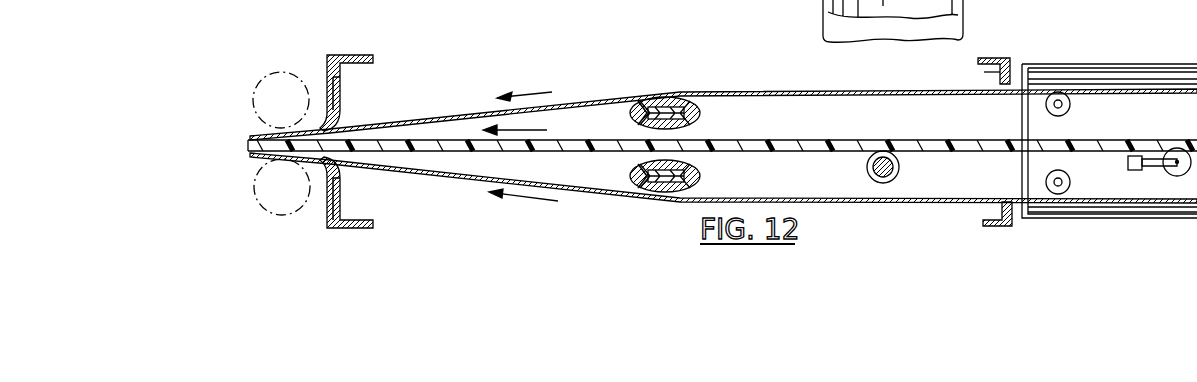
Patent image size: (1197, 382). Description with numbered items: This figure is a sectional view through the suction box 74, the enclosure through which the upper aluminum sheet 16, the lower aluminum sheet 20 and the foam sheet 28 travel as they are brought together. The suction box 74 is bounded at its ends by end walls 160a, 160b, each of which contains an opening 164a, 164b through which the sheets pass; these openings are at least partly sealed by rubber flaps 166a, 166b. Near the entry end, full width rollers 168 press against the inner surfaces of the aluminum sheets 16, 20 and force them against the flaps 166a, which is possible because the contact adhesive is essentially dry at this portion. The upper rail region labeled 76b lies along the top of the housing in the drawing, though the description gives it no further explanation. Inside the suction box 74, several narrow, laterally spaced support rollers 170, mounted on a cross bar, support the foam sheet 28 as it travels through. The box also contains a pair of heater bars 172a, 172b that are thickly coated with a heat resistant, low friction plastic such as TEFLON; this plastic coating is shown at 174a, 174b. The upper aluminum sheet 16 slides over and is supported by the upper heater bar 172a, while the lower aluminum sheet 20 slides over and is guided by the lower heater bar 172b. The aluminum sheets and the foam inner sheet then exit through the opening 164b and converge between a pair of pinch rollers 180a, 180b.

The upper aluminum sheet 16 is at (786, 88).
The lower aluminum sheet 20 is at (846, 203).
The foam sheet 28 is at (848, 138).
The suction box 74 is at (359, 52).
The housing rail 76b is at (1143, 66).
The end wall 160a is at (1012, 60).
The end wall 160b is at (320, 58).
The opening 164a is at (1012, 212).
The opening 164b is at (320, 168).
The rubber flap 166a is at (990, 72).
The rubber flap 166b is at (342, 97).
The full width roller 168 is at (1071, 104).
The support roller 170 is at (900, 167).
The upper heater bar 172a is at (702, 113).
The lower heater bar 172b is at (702, 176).
The plastic coating 174a is at (636, 108).
The plastic coating 174b is at (636, 178).
The pinch roller 180a is at (281, 95).
The pinch roller 180b is at (283, 188).